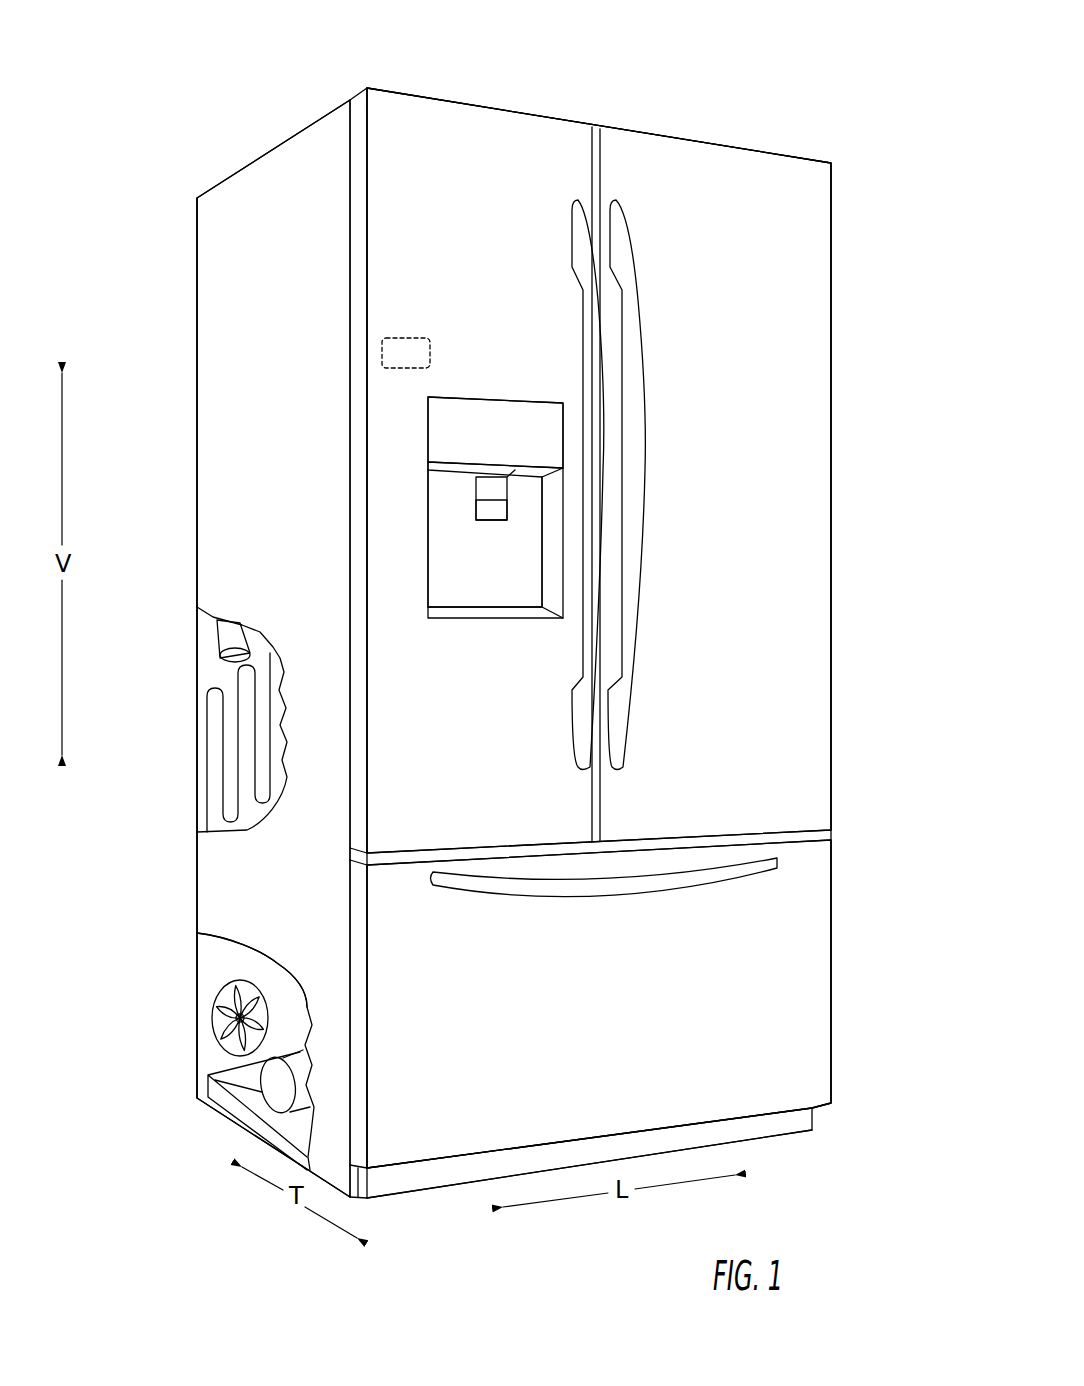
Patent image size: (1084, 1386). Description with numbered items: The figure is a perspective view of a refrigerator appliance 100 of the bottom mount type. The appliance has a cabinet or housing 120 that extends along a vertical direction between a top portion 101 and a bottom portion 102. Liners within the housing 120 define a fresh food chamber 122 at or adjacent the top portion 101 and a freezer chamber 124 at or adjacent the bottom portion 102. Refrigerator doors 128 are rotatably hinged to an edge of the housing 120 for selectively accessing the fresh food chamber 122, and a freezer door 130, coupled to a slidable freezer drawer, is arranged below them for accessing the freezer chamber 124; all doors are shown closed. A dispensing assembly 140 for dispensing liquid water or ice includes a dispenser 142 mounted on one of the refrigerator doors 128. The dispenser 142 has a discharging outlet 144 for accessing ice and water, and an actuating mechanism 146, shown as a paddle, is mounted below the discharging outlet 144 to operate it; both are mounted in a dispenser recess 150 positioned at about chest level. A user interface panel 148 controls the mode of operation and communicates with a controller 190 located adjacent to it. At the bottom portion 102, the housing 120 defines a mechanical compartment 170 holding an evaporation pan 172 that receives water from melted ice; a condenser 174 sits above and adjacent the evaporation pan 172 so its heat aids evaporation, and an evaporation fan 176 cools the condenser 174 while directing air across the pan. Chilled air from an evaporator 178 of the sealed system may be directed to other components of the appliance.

The refrigerator appliance 100 is at (812, 92).
The top portion 101 is at (170, 198).
The bottom portion 102 is at (178, 1098).
The housing 120 is at (295, 170).
The fresh food chamber 122 is at (876, 167).
The freezer chamber 124 is at (876, 838).
The refrigerator doors 128 is at (495, 228).
The freezer door 130 is at (632, 1021).
The dispensing assembly 140 is at (463, 430).
The dispenser 142 is at (428, 587).
The discharging outlet 144 is at (490, 477).
The actuating mechanism 146 is at (475, 513).
The user interface panel 148 is at (505, 422).
The dispenser recess 150 is at (500, 590).
The mechanical compartment 170 is at (212, 970).
The evaporation pan 172 is at (283, 1135).
The condenser 174 is at (230, 1110).
The evaporation fan 176 is at (210, 1017).
The evaporator 178 is at (197, 698).
The controller 190 is at (397, 337).